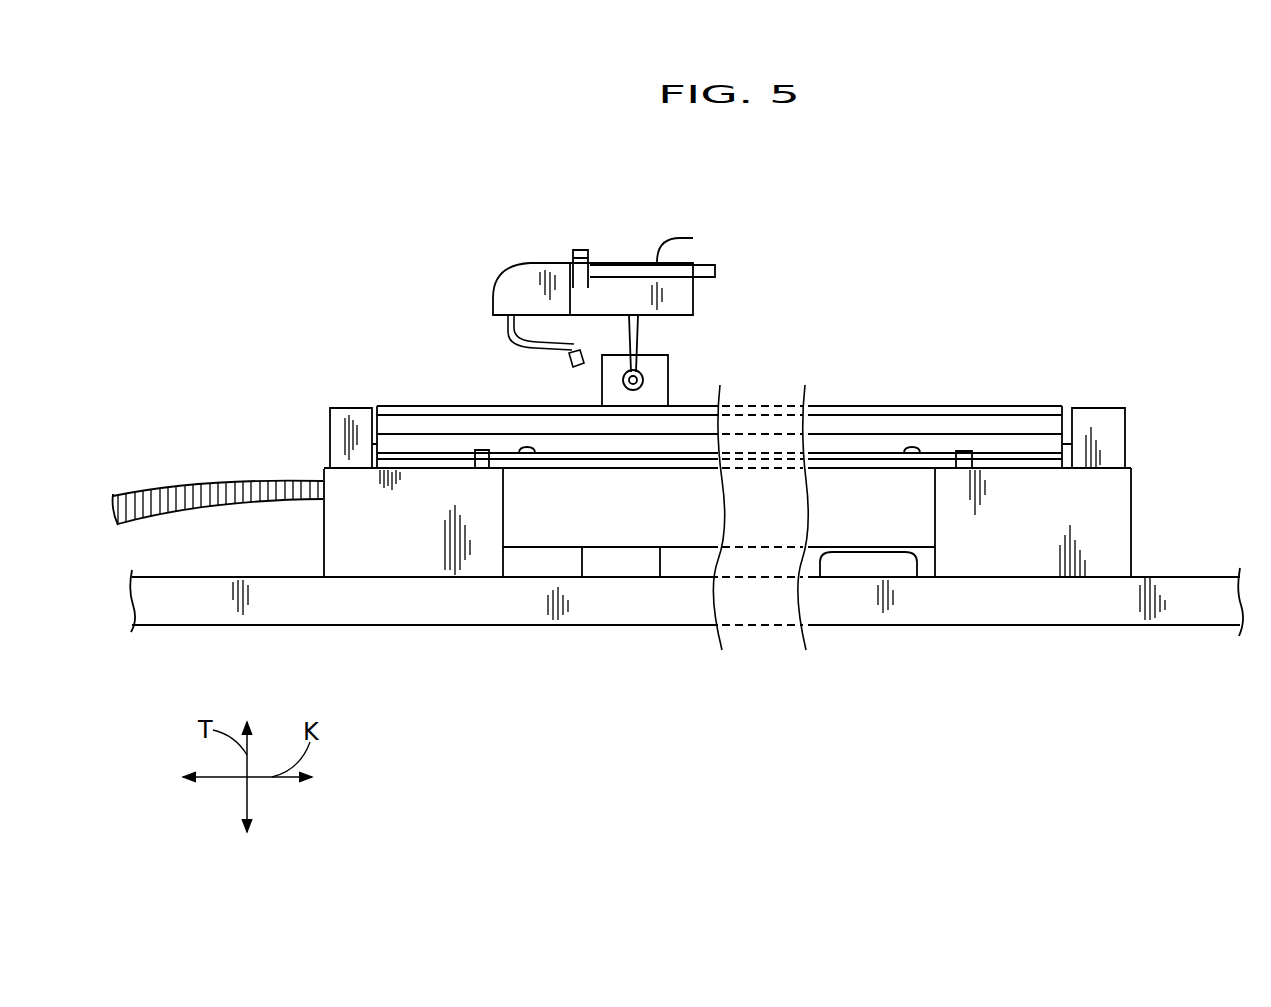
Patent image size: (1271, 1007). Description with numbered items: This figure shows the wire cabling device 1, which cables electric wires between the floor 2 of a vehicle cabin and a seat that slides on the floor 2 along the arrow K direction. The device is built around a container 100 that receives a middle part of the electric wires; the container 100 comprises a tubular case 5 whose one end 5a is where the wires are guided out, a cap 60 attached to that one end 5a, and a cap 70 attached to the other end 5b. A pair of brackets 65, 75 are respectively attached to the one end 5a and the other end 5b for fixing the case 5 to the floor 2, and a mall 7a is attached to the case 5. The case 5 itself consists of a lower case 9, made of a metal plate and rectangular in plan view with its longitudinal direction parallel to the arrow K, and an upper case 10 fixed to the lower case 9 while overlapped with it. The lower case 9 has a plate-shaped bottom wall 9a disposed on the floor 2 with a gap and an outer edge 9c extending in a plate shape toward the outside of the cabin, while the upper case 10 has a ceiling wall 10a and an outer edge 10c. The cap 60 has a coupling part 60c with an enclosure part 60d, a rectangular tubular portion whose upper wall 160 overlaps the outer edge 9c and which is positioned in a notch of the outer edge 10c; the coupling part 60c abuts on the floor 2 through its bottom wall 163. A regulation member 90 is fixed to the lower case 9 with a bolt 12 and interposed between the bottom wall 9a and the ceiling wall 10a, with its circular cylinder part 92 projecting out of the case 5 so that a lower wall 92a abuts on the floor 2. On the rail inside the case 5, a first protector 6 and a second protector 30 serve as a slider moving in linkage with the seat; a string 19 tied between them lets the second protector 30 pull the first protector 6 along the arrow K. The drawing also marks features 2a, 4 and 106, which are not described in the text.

The wire cabling device 1 is at (998, 250).
The floor 2 is at (1207, 612).
The base projection 2a is at (902, 565).
The cable 4 is at (166, 482).
The case 5 is at (1077, 317).
The one end 5a is at (386, 436).
The other end 5b is at (1053, 433).
The first protector 6 is at (658, 352).
The mall 7a is at (885, 404).
The lower case 9 is at (1013, 480).
The bottom wall 9a is at (530, 550).
The outer edge 9c is at (558, 470).
The upper case 10 is at (998, 430).
The ceiling wall 10a is at (688, 446).
The outer edge 10c is at (585, 454).
The bolt 12 is at (526, 447).
The string 19 is at (636, 324).
The second protector 30 is at (688, 232).
The cap 60 is at (322, 541).
The coupling part 60c is at (485, 583).
The enclosure part 60d is at (477, 450).
The bracket 65 is at (326, 418).
The cap 70 is at (1135, 482).
The bracket 75 is at (1112, 402).
The regulation member 90 is at (603, 583).
The circular cylinder part 92 is at (643, 558).
The lower wall 92a is at (620, 578).
The container 100 is at (350, 404).
The post flange 106 is at (1095, 462).
The upper wall 160 is at (414, 440).
The bottom wall 163 is at (402, 580).